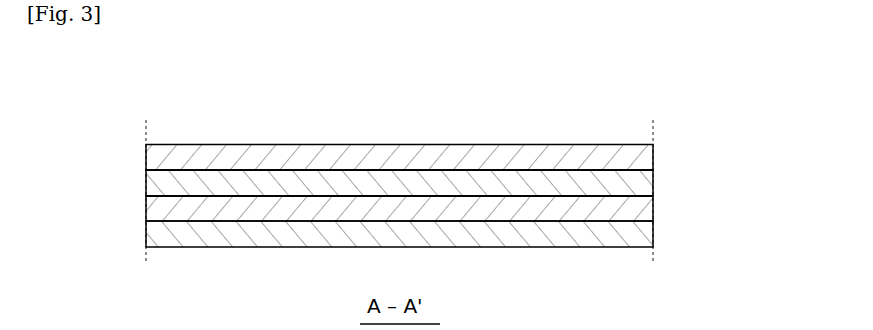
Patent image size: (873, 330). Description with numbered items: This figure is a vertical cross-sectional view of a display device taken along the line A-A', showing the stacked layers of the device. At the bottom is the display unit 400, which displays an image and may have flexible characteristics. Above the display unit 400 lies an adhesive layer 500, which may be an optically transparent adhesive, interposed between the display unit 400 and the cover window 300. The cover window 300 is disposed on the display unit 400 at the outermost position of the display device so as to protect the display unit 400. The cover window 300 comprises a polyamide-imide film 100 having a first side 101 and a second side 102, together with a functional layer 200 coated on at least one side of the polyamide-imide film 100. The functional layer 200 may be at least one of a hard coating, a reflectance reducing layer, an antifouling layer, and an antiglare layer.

The polyamide-imide film 100 is at (652, 180).
The first side 101 is at (218, 196).
The second side 102 is at (207, 170).
The functional layer 200 is at (652, 153).
The cover window 300 is at (716, 140).
The display unit 400 is at (652, 231).
The adhesive layer 500 is at (652, 206).